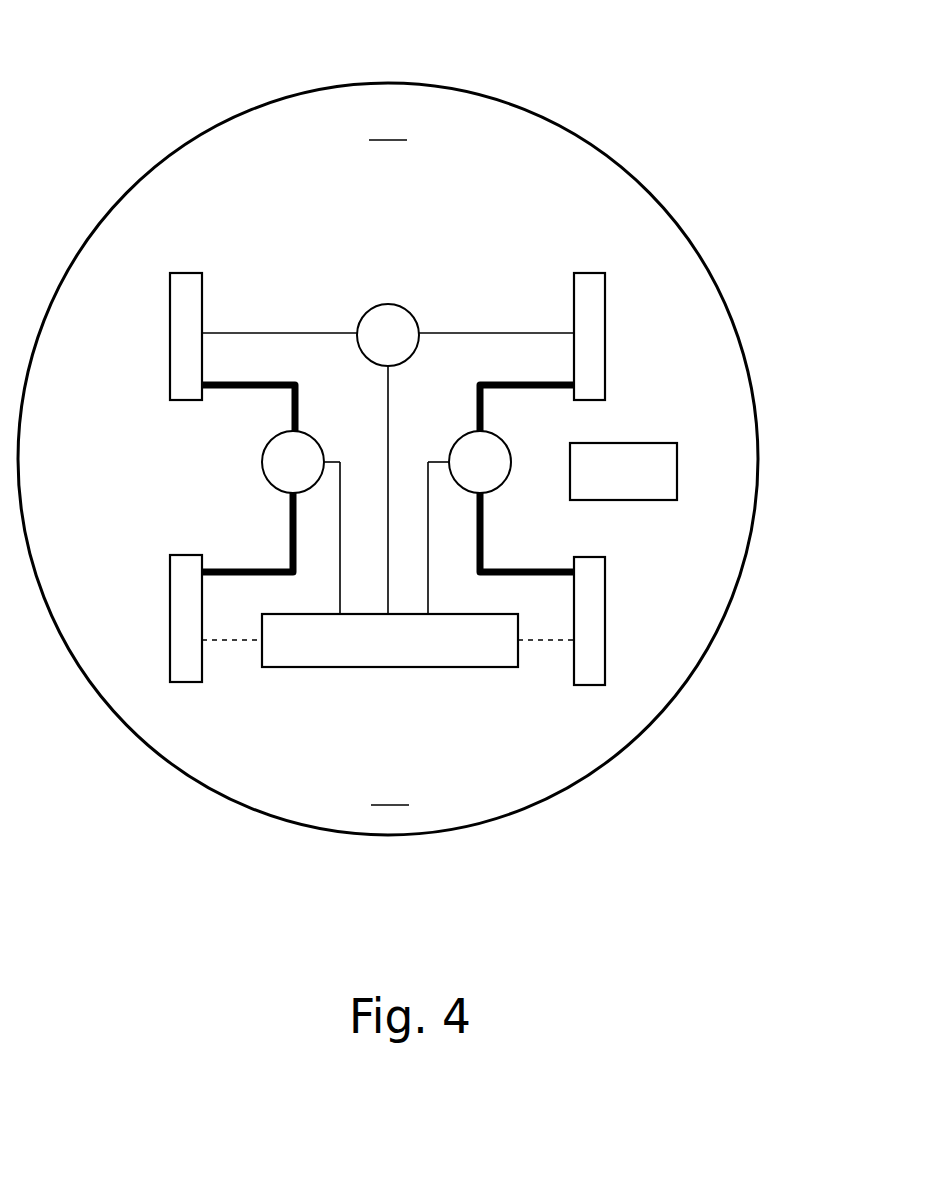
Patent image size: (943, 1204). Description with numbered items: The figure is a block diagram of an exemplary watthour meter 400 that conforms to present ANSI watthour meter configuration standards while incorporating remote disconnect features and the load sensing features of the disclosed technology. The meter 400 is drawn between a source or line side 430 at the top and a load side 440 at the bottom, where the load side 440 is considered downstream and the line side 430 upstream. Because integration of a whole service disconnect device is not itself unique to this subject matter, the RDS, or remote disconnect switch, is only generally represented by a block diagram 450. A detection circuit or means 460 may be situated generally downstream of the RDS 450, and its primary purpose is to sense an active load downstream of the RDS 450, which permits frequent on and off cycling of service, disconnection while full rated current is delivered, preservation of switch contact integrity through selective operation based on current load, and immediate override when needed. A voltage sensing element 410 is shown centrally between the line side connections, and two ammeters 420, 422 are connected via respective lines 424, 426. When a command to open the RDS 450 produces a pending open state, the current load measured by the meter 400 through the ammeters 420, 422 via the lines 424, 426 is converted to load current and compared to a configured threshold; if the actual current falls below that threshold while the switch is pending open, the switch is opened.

The watthour meter 400 is at (706, 190).
The voltage sensor 410 is at (390, 304).
The ammeter 420 is at (262, 455).
The ammeter 422 is at (508, 473).
The line 424 is at (342, 460).
The line 426 is at (428, 460).
The line side 430 is at (387, 274).
The load side 440 is at (387, 649).
The remote disconnect switch (RDS) device 450 is at (638, 443).
The detection circuit 460 is at (273, 711).